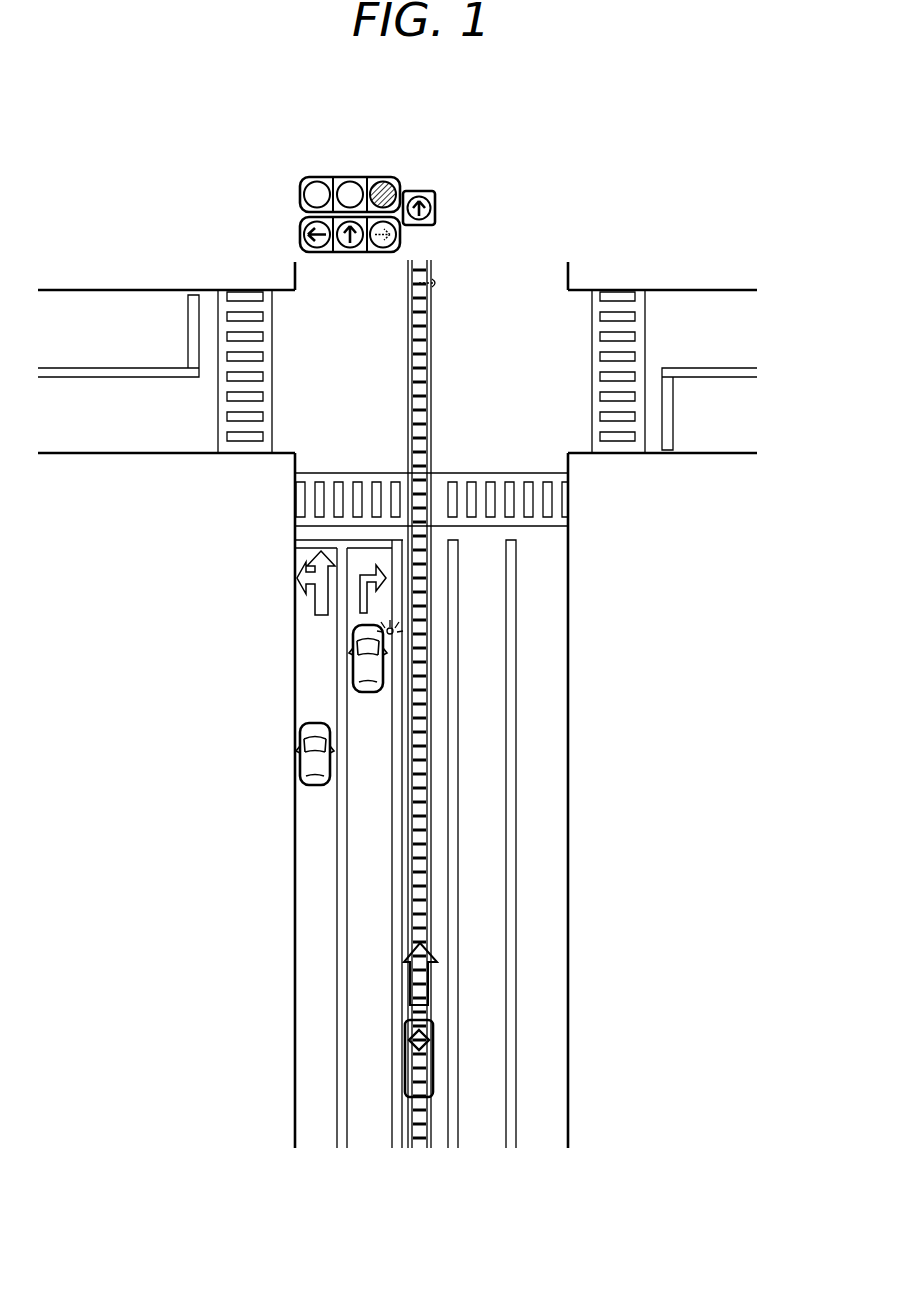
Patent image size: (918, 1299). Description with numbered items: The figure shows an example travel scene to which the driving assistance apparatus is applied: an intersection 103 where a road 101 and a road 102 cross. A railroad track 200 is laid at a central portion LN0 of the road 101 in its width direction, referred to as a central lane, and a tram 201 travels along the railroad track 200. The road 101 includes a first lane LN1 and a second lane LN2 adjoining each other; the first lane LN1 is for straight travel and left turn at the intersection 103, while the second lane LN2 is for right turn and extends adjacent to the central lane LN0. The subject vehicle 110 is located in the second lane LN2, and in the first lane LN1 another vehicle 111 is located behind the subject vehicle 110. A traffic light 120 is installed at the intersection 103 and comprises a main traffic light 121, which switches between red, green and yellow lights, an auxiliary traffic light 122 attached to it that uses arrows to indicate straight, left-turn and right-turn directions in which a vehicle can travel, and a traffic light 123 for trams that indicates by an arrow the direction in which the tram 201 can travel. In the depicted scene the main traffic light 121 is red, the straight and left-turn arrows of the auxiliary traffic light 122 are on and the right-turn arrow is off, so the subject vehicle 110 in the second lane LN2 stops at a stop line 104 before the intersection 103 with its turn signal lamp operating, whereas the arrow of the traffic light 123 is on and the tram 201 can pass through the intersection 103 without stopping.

The road 101 is at (303, 1018).
The road 102 is at (137, 437).
The intersection 103 is at (535, 282).
The stop line 104 is at (312, 540).
The subject vehicle 110 is at (355, 665).
The another vehicle 111 is at (300, 752).
The traffic light 120 is at (342, 187).
The main traffic light 121 is at (300, 196).
The auxiliary traffic light 122 is at (300, 236).
The traffic light for trams 123 is at (422, 190).
The railroad track 200 is at (431, 682).
The tram 201 is at (433, 1080).
The central lane LN0 is at (435, 1135).
The first lane LN1 is at (315, 1135).
The second lane LN2 is at (370, 1135).